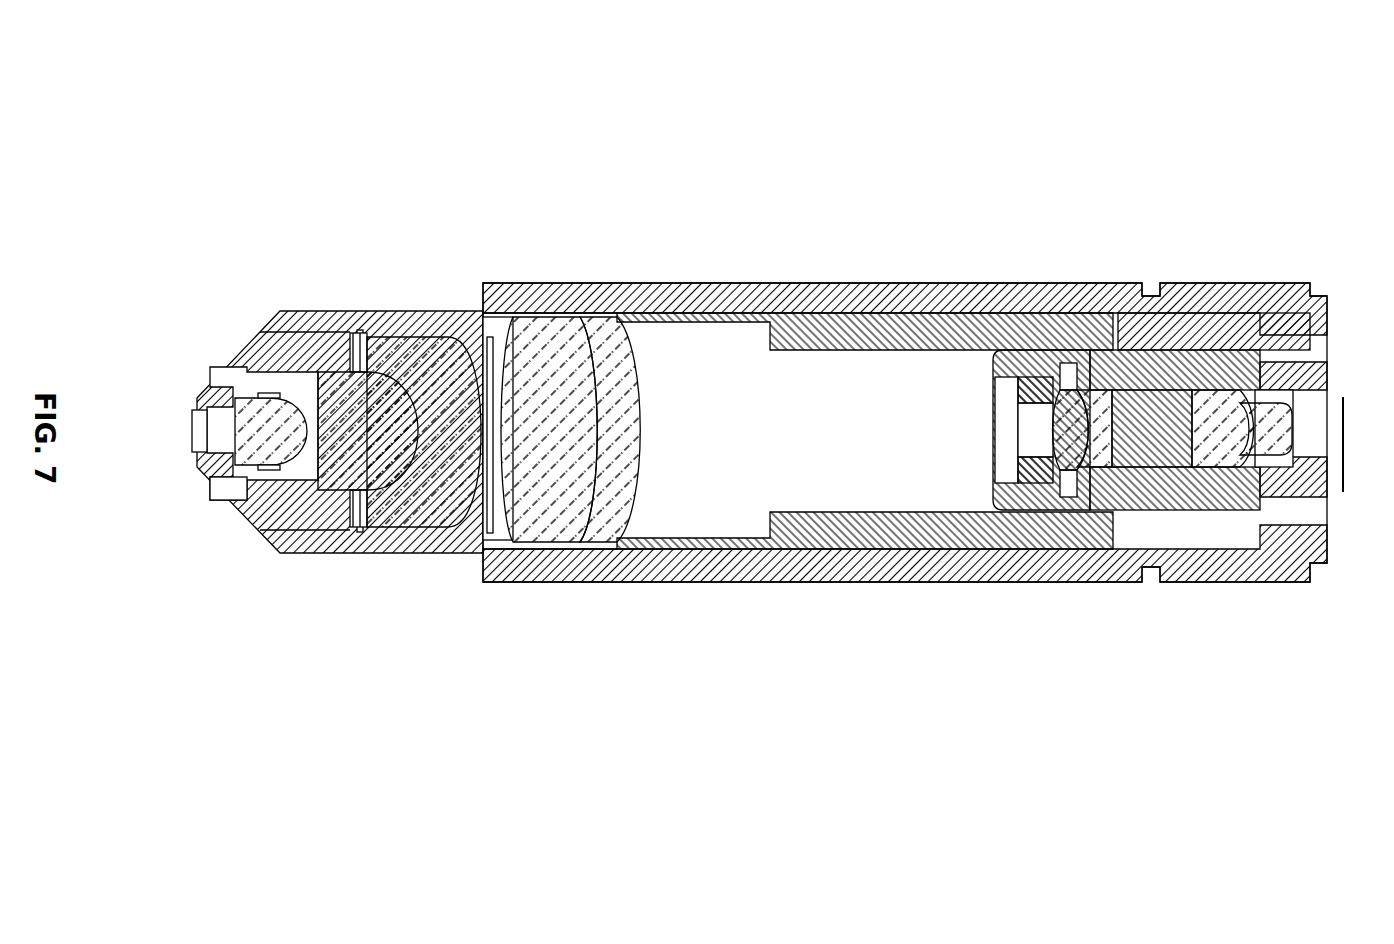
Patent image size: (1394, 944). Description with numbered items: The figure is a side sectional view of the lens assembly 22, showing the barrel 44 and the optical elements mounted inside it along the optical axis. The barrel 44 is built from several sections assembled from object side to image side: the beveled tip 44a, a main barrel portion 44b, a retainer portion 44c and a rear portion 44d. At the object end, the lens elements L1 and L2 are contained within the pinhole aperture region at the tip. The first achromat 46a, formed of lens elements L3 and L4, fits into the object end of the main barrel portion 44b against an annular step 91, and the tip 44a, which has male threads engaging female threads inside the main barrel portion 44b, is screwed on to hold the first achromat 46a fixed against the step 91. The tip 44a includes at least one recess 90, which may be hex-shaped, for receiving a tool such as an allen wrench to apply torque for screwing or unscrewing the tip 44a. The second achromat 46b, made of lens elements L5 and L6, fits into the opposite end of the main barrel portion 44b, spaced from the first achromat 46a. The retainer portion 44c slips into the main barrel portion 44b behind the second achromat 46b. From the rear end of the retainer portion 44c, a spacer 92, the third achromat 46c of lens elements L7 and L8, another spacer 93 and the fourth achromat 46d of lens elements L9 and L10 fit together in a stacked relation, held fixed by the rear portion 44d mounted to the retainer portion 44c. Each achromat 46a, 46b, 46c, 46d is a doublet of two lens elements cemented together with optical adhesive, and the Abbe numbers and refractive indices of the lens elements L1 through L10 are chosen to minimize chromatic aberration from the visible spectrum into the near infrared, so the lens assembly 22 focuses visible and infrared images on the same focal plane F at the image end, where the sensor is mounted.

The lens assembly 22 is at (1084, 130).
The barrel 44 is at (660, 279).
The beveled tip 44a is at (262, 358).
The main barrel portion 44b is at (808, 298).
The retainer portion 44c is at (899, 328).
The rear portion 44d is at (1213, 337).
The first achromat 46a is at (397, 326).
The second achromat 46b is at (547, 300).
The third achromat 46c is at (1087, 372).
The fourth achromat 46d is at (1257, 385).
The recess 90 is at (237, 482).
The annular step 91 is at (470, 338).
The spacer 92 is at (1048, 376).
The spacer 93 is at (1160, 472).
The lens element L1 is at (196, 410).
The lens element L2 is at (281, 480).
The lens element L3 is at (368, 475).
The lens element L4 is at (415, 515).
The lens element L5 is at (537, 522).
The lens element L6 is at (595, 522).
The lens element L7 is at (1057, 482).
The lens element L8 is at (1102, 480).
The lens element L9 is at (1212, 472).
The lens element L10 is at (1242, 472).
The focal plane F is at (1343, 412).